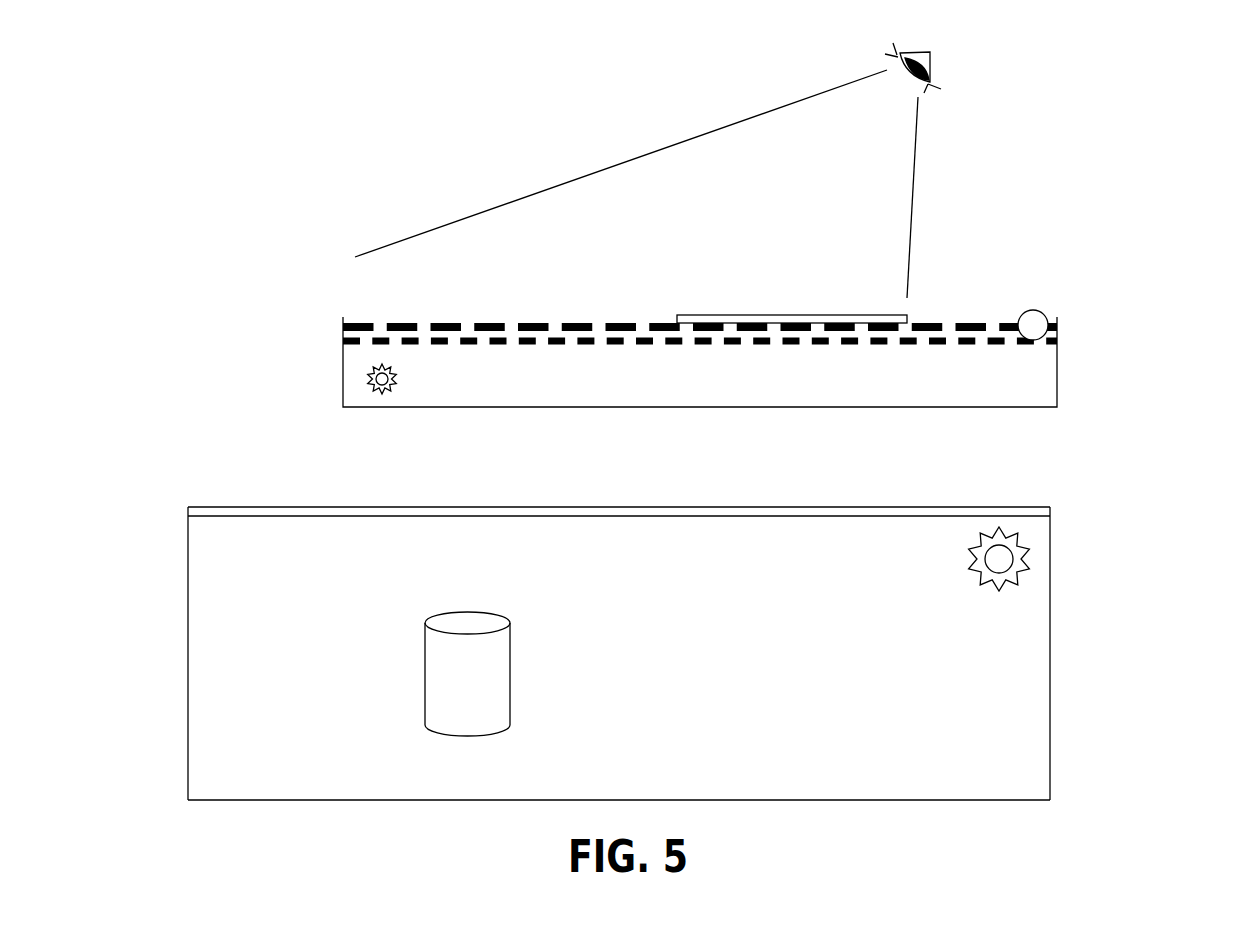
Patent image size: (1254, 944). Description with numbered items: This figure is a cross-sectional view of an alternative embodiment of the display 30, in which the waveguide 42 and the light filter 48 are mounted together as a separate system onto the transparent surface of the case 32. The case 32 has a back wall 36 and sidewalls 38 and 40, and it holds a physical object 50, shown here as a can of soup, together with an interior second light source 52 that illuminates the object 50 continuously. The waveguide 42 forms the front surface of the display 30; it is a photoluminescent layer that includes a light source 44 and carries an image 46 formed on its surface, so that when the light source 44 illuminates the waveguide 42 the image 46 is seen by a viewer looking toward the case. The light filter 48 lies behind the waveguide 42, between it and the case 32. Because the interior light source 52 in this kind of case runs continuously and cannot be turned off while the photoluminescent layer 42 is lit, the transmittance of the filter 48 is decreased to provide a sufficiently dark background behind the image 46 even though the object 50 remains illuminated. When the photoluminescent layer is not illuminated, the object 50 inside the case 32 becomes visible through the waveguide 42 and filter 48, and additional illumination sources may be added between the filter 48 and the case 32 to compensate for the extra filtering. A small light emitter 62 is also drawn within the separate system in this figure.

The display 30 is at (714, 653).
The case 32 is at (1052, 685).
The back wall 36 is at (621, 797).
The sidewall 38 is at (190, 672).
The sidewall 40 is at (1048, 740).
The waveguide 42 is at (438, 323).
The light source 44 is at (1040, 311).
The image 46 is at (909, 321).
The light filter 48 is at (518, 338).
The physical object 50 is at (512, 672).
The second light source 52 is at (985, 590).
The light emitter 62 is at (397, 378).